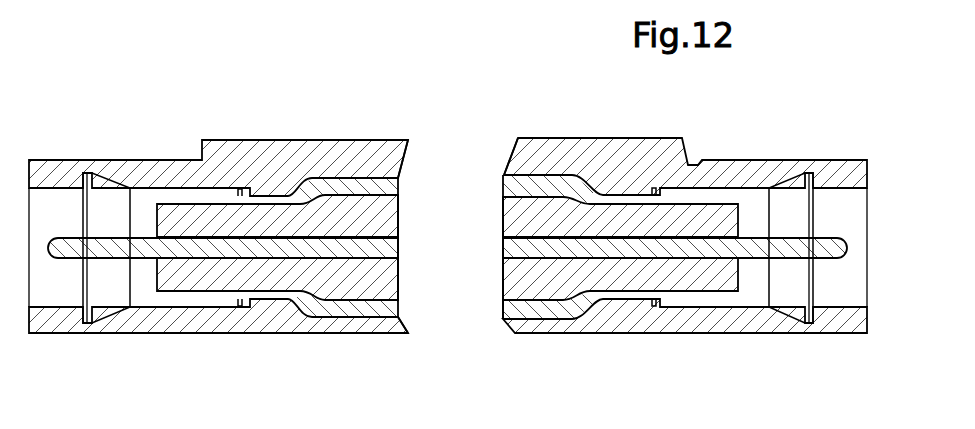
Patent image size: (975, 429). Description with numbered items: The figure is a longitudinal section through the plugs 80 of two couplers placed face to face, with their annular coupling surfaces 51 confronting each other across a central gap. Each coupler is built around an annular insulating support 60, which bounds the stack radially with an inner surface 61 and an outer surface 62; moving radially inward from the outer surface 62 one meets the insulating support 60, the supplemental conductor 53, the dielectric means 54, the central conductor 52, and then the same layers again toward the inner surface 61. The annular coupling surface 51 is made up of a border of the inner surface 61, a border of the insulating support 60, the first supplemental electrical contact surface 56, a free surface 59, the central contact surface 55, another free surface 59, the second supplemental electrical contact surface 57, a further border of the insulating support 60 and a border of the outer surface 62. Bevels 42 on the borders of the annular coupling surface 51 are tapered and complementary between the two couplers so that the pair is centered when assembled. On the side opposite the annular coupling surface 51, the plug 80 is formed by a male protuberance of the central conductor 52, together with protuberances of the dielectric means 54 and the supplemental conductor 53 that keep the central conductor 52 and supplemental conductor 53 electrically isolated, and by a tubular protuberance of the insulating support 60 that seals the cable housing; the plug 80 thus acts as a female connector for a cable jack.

The bevel 42 is at (404, 172).
The annular coupling surface 51 is at (410, 320).
The central conductor 52 is at (117, 243).
The supplemental conductor 53 is at (240, 195).
The dielectric means 54 is at (183, 217).
The central contact surface 55 is at (447, 248).
The first supplemental electrical contact surface 56 is at (500, 318).
The second supplemental electrical contact surface 57 is at (402, 184).
The free surface 59 is at (496, 220).
The insulating support 60 is at (448, 241).
The inner surface 61 is at (357, 335).
The outer surface 62 is at (337, 140).
The plug 80 is at (448, 245).